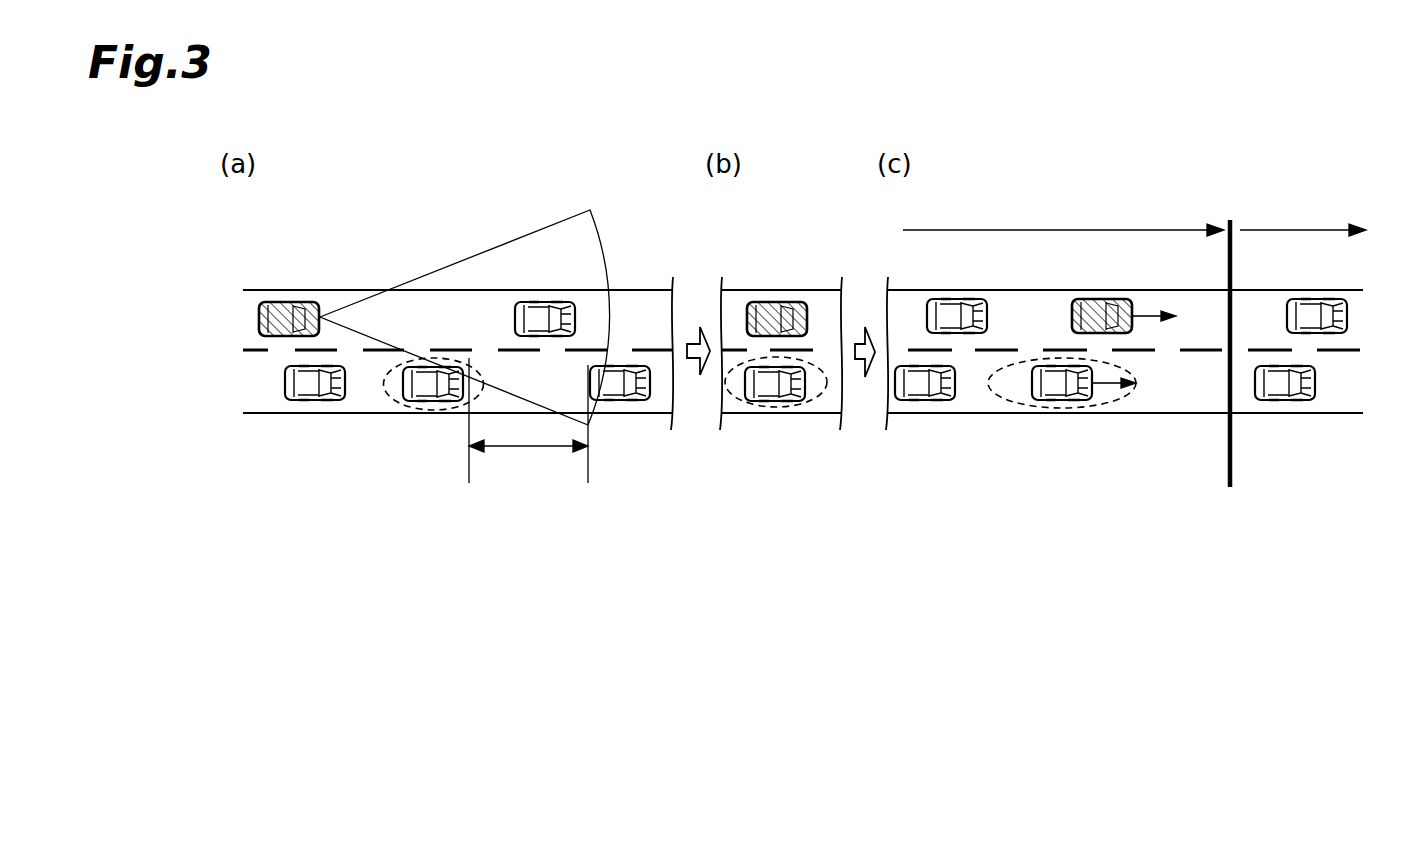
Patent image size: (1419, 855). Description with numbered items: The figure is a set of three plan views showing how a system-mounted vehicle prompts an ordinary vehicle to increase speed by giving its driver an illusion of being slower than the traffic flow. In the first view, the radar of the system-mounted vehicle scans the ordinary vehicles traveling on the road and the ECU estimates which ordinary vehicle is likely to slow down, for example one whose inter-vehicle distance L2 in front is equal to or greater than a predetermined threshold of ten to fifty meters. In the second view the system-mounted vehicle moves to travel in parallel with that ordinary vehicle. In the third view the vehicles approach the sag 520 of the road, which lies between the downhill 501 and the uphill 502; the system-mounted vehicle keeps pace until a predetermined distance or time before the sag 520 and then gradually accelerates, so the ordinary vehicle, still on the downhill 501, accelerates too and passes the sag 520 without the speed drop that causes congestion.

The downhill 501 is at (1163, 228).
The uphill 502 is at (1306, 228).
The sag 520 is at (1228, 248).
The inter-vehicle distance L2 is at (528, 420).